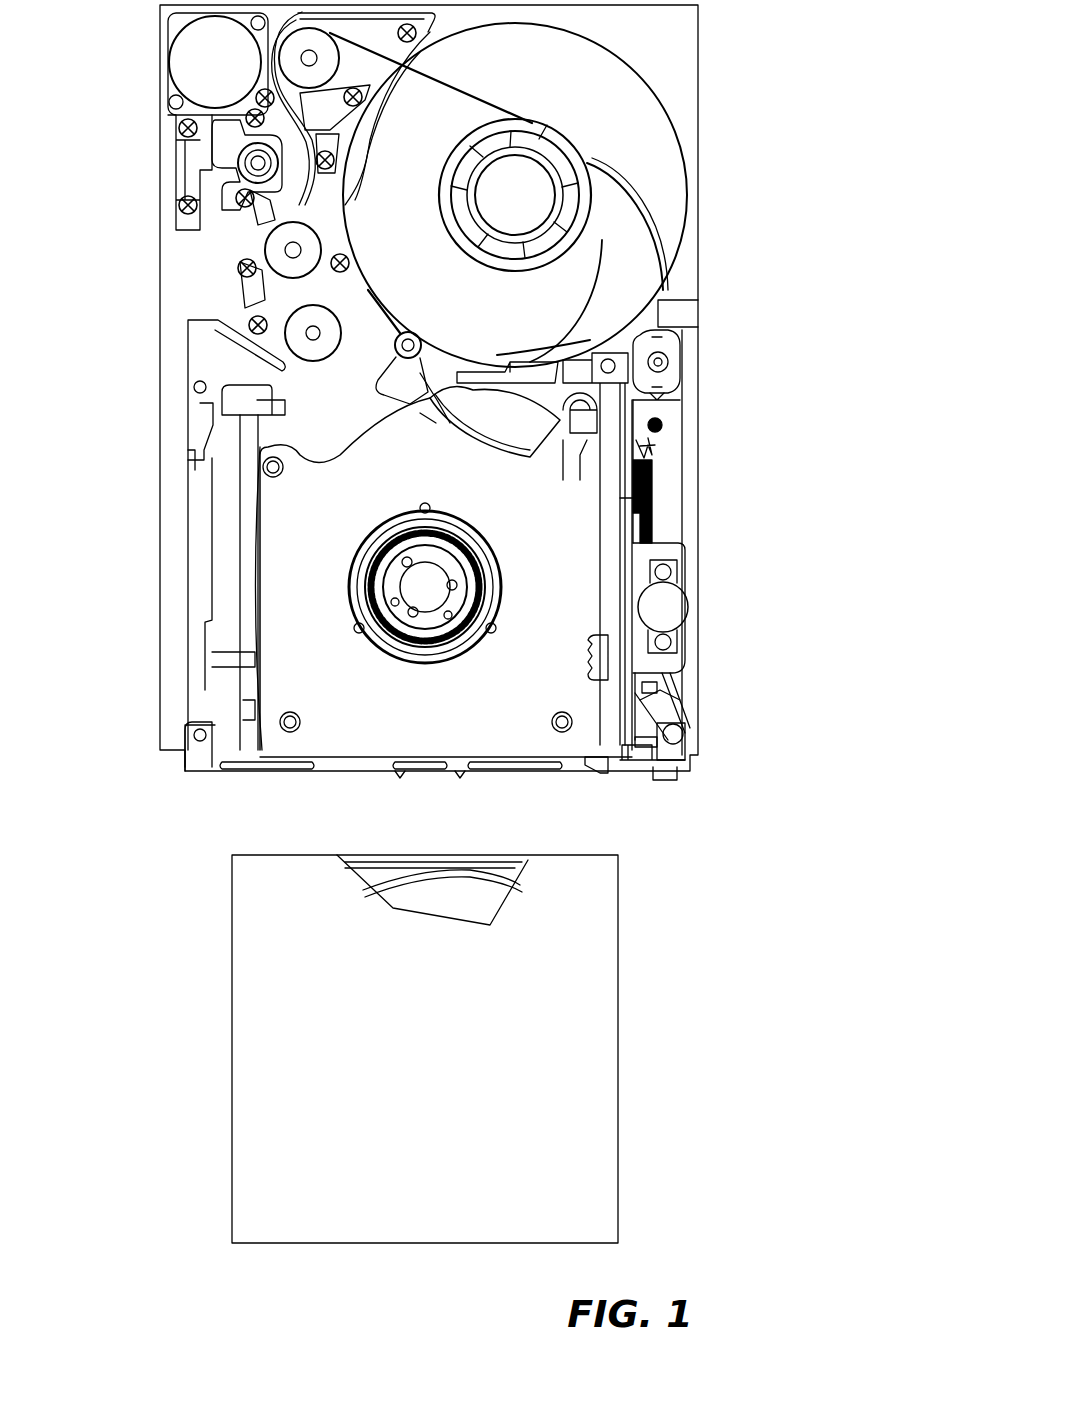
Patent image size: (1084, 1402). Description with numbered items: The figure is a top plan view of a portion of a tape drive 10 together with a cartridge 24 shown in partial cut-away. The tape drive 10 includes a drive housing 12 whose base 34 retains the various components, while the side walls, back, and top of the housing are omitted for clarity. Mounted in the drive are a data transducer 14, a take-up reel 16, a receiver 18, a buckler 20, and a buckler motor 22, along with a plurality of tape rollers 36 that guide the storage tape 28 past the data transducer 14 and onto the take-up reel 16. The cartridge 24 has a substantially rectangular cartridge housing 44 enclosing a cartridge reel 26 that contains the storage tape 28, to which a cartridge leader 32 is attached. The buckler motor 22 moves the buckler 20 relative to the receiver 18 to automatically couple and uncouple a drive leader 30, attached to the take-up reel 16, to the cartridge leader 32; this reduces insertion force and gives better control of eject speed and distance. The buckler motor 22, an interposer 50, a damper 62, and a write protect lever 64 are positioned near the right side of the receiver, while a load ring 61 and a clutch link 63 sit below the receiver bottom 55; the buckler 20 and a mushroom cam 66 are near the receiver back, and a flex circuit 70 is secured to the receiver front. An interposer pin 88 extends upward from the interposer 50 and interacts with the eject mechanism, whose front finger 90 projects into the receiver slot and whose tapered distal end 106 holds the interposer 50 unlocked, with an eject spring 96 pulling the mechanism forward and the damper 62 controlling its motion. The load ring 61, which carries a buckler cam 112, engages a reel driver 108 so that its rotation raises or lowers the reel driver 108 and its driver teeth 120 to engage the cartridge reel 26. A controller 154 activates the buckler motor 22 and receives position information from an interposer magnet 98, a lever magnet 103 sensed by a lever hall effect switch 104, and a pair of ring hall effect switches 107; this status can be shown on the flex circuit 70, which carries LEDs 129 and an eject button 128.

The tape drive 10 is at (758, 530).
The drive housing 12 is at (700, 220).
The data transducer 14 is at (275, 163).
The take-up reel 16 is at (638, 128).
The receiver 18 is at (182, 488).
The buckler 20 is at (300, 333).
The buckler motor 22 is at (680, 370).
The cartridge 24 is at (642, 982).
The cartridge reel 26 is at (395, 890).
The storage tape 28 is at (521, 856).
The drive leader 30 is at (405, 378).
The cartridge leader 32 is at (517, 877).
The base 34 is at (183, 280).
The tape rollers 36 is at (285, 250).
The cartridge housing 44 is at (622, 1025).
The interposer 50 is at (690, 700).
The receiver bottom 55 is at (595, 745).
The load ring 61 is at (530, 425).
The damper 62 is at (680, 595).
The clutch link 63 is at (248, 538).
The write protect lever 64 is at (650, 690).
The mushroom cam 66 is at (690, 340).
The flex circuit 70 is at (275, 775).
The interposer pin 88 is at (670, 660).
The front finger 90 is at (650, 455).
The eject spring 96 is at (655, 490).
The interposer magnet 98 is at (680, 725).
The lever magnet 103 is at (687, 760).
The lever hall effect switch 104 is at (640, 775).
The tapered distal end 106 is at (670, 742).
The ring hall effect switches 107 is at (460, 775).
The reel driver 108 is at (365, 592).
The buckler cam 112 is at (660, 415).
The driver teeth 120 is at (362, 612).
The eject button 128 is at (680, 780).
The LEDs 129 is at (530, 770).
The controller 154 is at (683, 312).